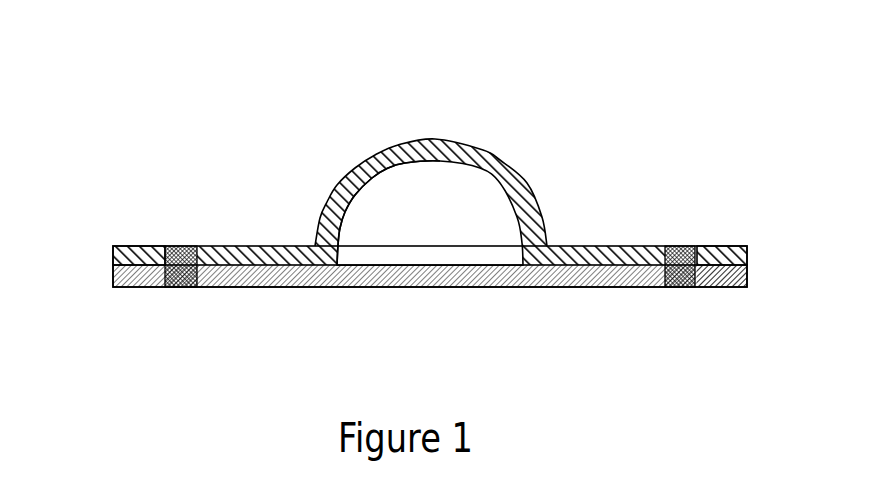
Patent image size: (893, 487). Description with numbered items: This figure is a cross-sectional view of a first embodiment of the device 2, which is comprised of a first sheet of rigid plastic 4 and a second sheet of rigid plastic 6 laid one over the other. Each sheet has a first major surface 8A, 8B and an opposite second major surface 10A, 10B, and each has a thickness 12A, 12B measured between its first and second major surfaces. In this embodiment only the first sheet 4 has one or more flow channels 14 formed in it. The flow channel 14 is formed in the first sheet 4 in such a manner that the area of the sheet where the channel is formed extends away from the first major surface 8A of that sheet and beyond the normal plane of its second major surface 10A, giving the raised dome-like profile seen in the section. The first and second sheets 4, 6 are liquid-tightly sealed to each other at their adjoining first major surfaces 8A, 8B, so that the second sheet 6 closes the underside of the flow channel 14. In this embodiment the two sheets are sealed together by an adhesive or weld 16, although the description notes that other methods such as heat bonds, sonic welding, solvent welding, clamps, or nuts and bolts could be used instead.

The device 2 is at (475, 108).
The first sheet of rigid plastic 4 is at (533, 204).
The second sheet of rigid plastic 6 is at (464, 288).
The first major surface 8A is at (338, 243).
The first major surface 8B is at (382, 264).
The second major surface 10A is at (712, 246).
The second major surface 10B is at (710, 288).
The thickness 12A is at (113, 259).
The thickness 12B is at (748, 277).
The flow channel 14 is at (450, 223).
The adhesive or weld 16 is at (180, 246).